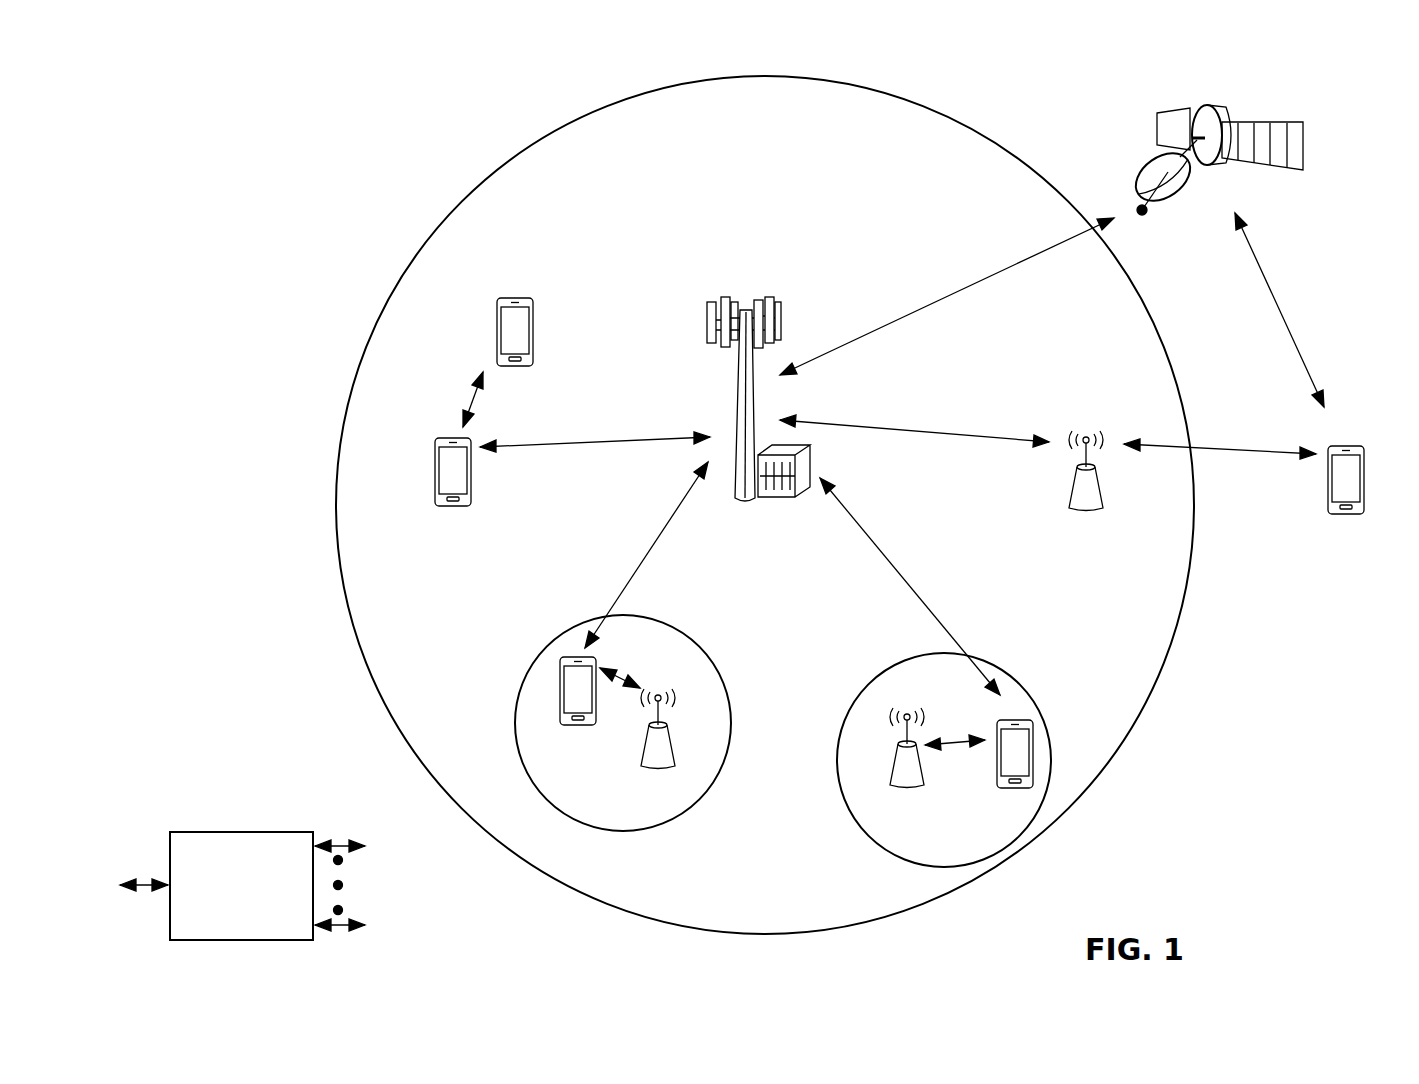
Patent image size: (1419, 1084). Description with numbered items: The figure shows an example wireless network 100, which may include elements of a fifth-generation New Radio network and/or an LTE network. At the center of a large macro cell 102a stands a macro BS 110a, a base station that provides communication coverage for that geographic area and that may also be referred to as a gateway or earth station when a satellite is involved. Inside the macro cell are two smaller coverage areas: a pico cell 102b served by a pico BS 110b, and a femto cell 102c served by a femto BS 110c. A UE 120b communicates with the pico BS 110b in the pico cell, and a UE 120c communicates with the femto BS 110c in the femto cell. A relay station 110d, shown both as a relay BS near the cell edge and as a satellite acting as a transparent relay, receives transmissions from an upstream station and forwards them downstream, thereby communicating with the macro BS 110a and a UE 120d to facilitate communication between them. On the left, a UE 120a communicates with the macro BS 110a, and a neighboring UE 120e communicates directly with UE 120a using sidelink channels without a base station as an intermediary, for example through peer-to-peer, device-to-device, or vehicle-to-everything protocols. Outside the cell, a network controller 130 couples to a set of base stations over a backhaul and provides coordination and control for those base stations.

The wireless network 100 is at (228, 82).
The macro cell 102a is at (1051, 189).
The pico cell 102b is at (716, 668).
The femto cell 102c is at (878, 670).
The macro BS 110a is at (754, 287).
The pico BS 110b is at (680, 758).
The femto BS 110c is at (892, 777).
The relay station 110d is at (1208, 102).
The UE 120a is at (435, 468).
The UE 120b is at (570, 725).
The UE 120c is at (1005, 790).
The UE 120d is at (1357, 444).
The UE 120e is at (497, 320).
The network controller 130 is at (240, 831).